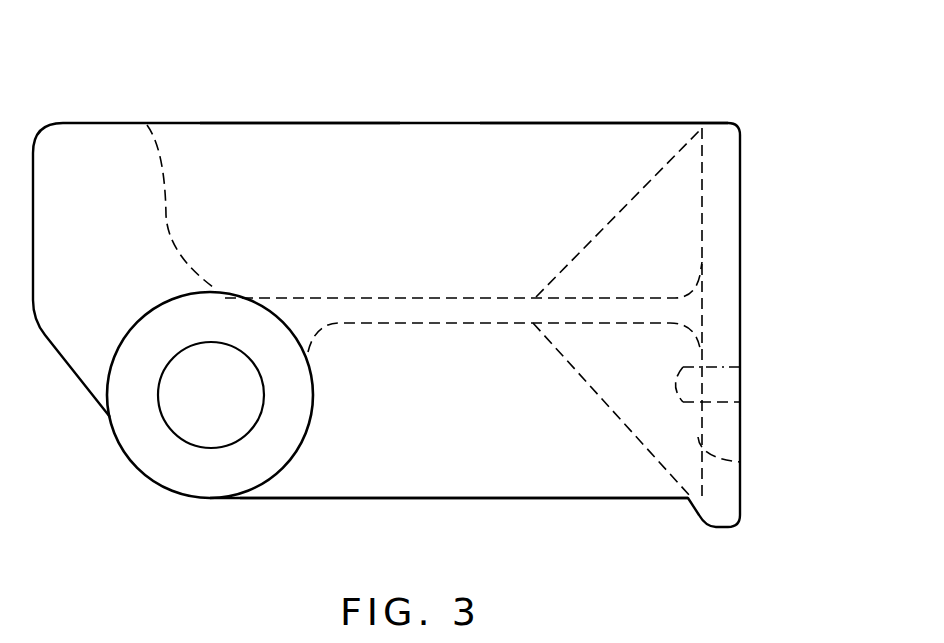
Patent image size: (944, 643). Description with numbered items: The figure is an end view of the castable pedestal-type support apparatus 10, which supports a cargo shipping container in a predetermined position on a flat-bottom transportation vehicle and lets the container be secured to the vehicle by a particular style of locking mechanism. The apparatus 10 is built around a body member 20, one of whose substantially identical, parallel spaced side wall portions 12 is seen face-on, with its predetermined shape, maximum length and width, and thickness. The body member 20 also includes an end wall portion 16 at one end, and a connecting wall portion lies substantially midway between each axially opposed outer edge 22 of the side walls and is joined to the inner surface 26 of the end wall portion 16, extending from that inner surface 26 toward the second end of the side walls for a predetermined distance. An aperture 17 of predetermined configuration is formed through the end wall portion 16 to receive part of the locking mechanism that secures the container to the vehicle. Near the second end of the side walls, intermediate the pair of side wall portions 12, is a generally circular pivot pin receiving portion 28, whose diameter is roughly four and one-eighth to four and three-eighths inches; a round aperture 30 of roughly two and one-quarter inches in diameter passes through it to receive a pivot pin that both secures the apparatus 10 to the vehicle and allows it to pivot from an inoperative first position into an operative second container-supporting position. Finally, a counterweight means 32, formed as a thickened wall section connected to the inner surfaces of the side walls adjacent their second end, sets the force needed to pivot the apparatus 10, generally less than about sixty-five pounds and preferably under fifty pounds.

The pedestal-type support apparatus 10 is at (430, 100).
The side wall portion 12 is at (395, 186).
The end wall portion 16 is at (728, 173).
The aperture 17 is at (745, 380).
The body member 20 is at (549, 122).
The outer edge 22 is at (290, 122).
The inner surface 26 is at (745, 463).
The pivot pin receiving portion 28 is at (200, 482).
The aperture 30 is at (226, 399).
The counterweight means 32 is at (112, 140).